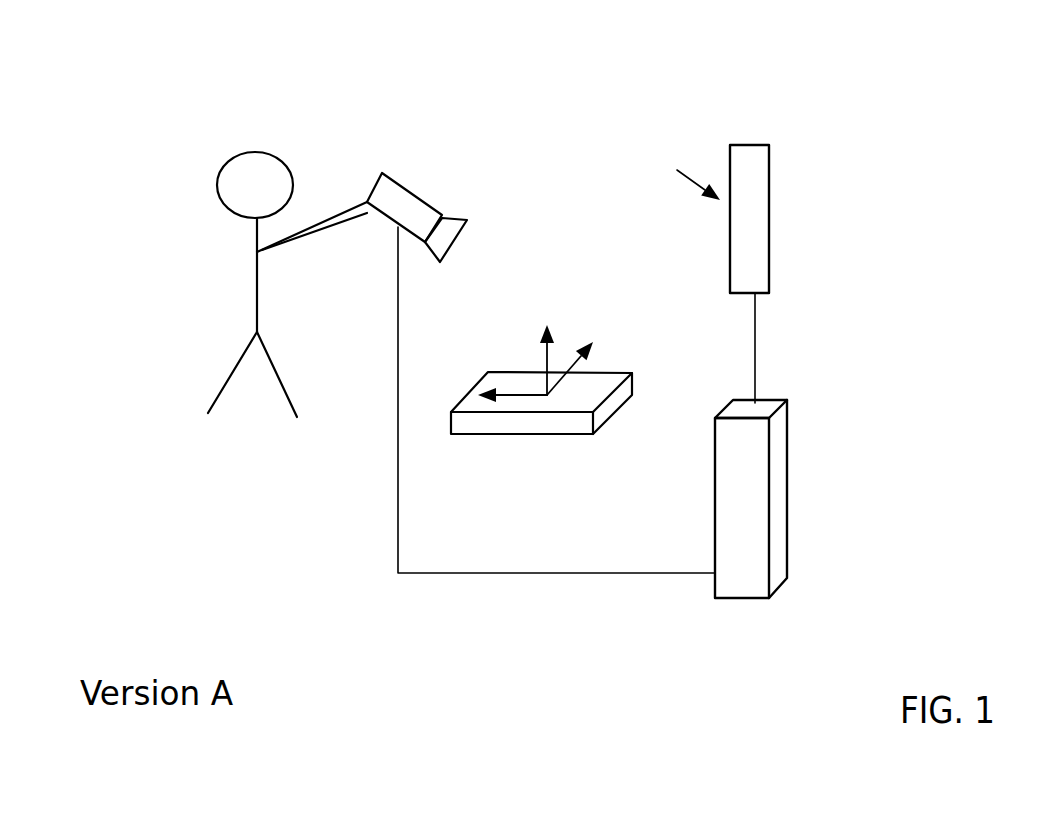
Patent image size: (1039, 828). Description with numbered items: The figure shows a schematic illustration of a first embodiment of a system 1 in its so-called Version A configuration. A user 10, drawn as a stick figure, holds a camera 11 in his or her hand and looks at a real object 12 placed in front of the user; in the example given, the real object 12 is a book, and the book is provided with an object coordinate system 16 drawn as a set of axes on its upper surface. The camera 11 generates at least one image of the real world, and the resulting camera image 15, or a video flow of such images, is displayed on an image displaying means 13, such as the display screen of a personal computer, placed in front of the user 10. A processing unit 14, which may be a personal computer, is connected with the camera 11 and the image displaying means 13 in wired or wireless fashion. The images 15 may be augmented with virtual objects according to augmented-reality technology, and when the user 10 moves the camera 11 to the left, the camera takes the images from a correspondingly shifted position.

The system 1 is at (283, 61).
The user 10 is at (208, 207).
The camera 11 is at (427, 192).
The real object 12 is at (527, 434).
The image displaying means 13 is at (780, 165).
The processing unit 14 is at (797, 443).
The camera image 15 is at (680, 168).
The object coordinate system 16 is at (550, 328).